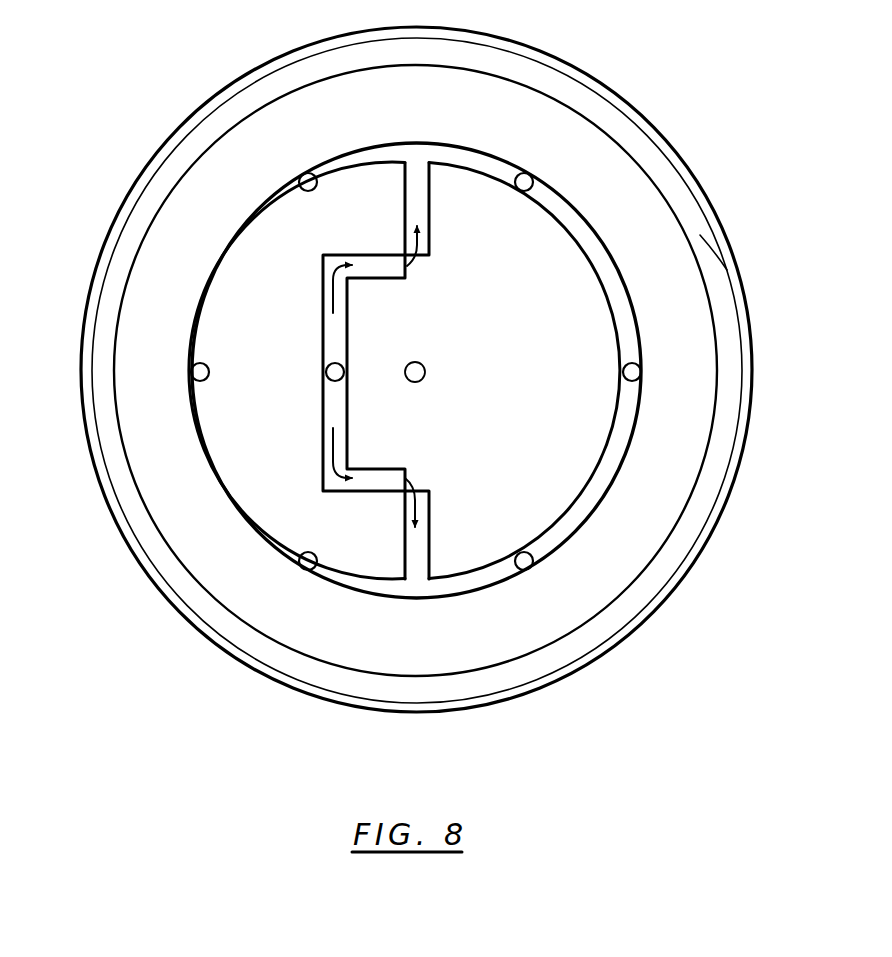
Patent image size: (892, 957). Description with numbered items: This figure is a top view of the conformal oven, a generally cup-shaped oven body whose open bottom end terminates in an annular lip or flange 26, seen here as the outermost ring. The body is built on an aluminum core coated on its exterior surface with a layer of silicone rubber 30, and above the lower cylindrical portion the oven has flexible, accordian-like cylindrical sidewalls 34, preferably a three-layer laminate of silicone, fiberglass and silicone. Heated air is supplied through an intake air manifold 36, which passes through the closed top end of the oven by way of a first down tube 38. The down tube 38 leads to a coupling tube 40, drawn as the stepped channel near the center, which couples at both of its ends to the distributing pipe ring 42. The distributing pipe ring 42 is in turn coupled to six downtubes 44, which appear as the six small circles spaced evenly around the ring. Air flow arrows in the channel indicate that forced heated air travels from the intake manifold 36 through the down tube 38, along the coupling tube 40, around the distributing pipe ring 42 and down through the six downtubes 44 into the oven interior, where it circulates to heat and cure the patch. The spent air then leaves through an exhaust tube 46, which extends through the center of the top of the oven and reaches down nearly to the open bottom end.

The annular lip or flange 26 is at (80, 405).
The layer of silicone rubber 30 is at (700, 277).
The flexible accordian-like cylindrical sidewalls 34 is at (727, 270).
The intake air manifold 36 is at (304, 338).
The first down tube 38 is at (343, 363).
The coupling tube 40 is at (405, 192).
The distributing pipe ring 42 is at (460, 159).
The downtubes 44 is at (307, 174).
The exhaust tube 46 is at (420, 363).